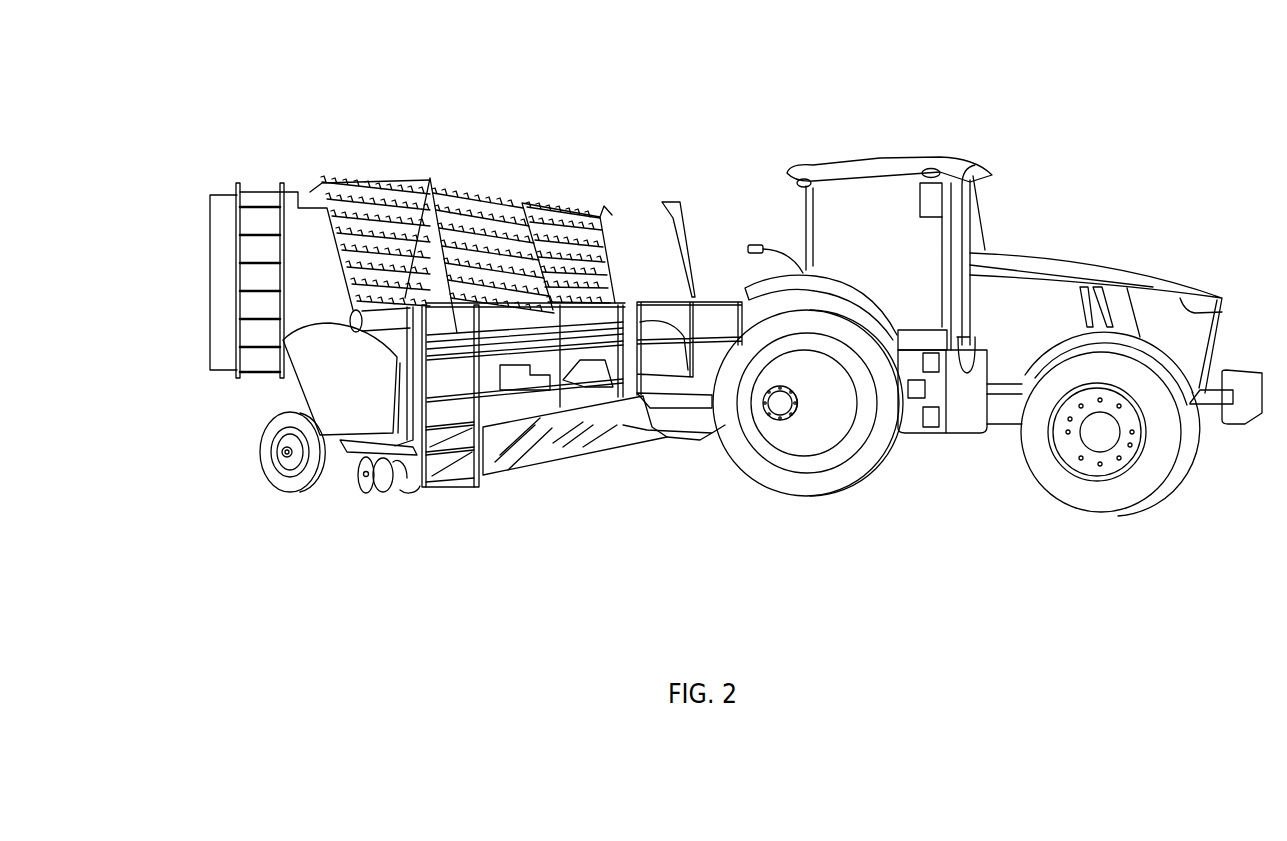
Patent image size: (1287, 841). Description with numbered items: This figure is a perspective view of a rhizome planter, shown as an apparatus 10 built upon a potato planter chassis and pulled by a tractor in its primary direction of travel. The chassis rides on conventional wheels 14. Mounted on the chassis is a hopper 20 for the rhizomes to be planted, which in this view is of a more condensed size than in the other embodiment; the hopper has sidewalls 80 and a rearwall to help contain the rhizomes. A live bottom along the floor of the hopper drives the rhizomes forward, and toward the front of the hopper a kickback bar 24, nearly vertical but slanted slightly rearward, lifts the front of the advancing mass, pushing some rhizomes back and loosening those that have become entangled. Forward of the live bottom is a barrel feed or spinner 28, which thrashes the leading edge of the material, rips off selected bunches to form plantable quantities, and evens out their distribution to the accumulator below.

The apparatus 10 is at (590, 572).
The wheels 14 is at (290, 482).
The hopper 20 is at (223, 342).
The kickback bar 24 is at (463, 193).
The barrel feed or spinner 28 is at (457, 333).
The sidewalls 80 is at (233, 273).